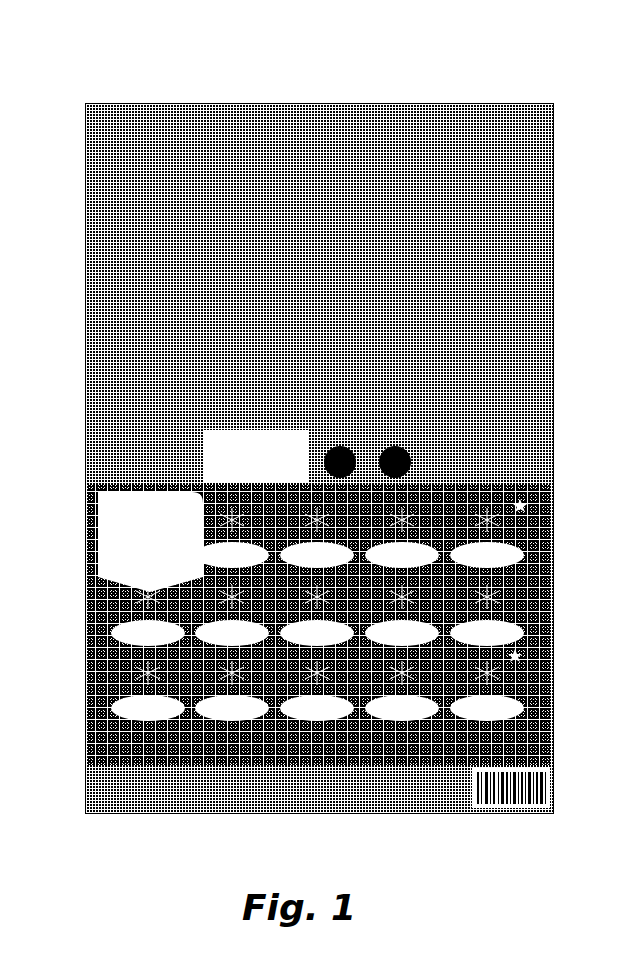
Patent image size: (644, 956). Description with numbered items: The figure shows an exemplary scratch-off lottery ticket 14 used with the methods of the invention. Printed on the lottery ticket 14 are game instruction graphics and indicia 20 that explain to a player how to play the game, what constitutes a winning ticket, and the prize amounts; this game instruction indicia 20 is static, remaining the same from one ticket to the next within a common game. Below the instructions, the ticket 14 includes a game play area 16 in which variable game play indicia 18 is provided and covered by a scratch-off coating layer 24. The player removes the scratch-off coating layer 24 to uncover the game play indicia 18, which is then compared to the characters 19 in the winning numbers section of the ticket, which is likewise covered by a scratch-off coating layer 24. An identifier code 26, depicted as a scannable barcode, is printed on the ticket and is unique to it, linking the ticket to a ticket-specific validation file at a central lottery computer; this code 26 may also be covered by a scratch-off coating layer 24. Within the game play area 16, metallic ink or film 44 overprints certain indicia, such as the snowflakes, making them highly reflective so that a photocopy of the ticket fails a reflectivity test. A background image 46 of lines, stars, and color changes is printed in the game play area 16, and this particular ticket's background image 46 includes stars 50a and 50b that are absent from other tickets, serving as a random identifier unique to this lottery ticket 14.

The lottery ticket 14 is at (476, 74).
The game play area 16 is at (562, 613).
The variable game play indicia 18 is at (125, 525).
The characters 19 is at (213, 463).
The game instruction graphics and indicia 20 is at (562, 393).
The scratch-off coating layer 24 is at (120, 585).
The identifier code 26 is at (519, 806).
The metallic ink or film 44 is at (130, 676).
The background image 46 is at (462, 492).
The star 50a is at (522, 505).
The star 50b is at (520, 655).